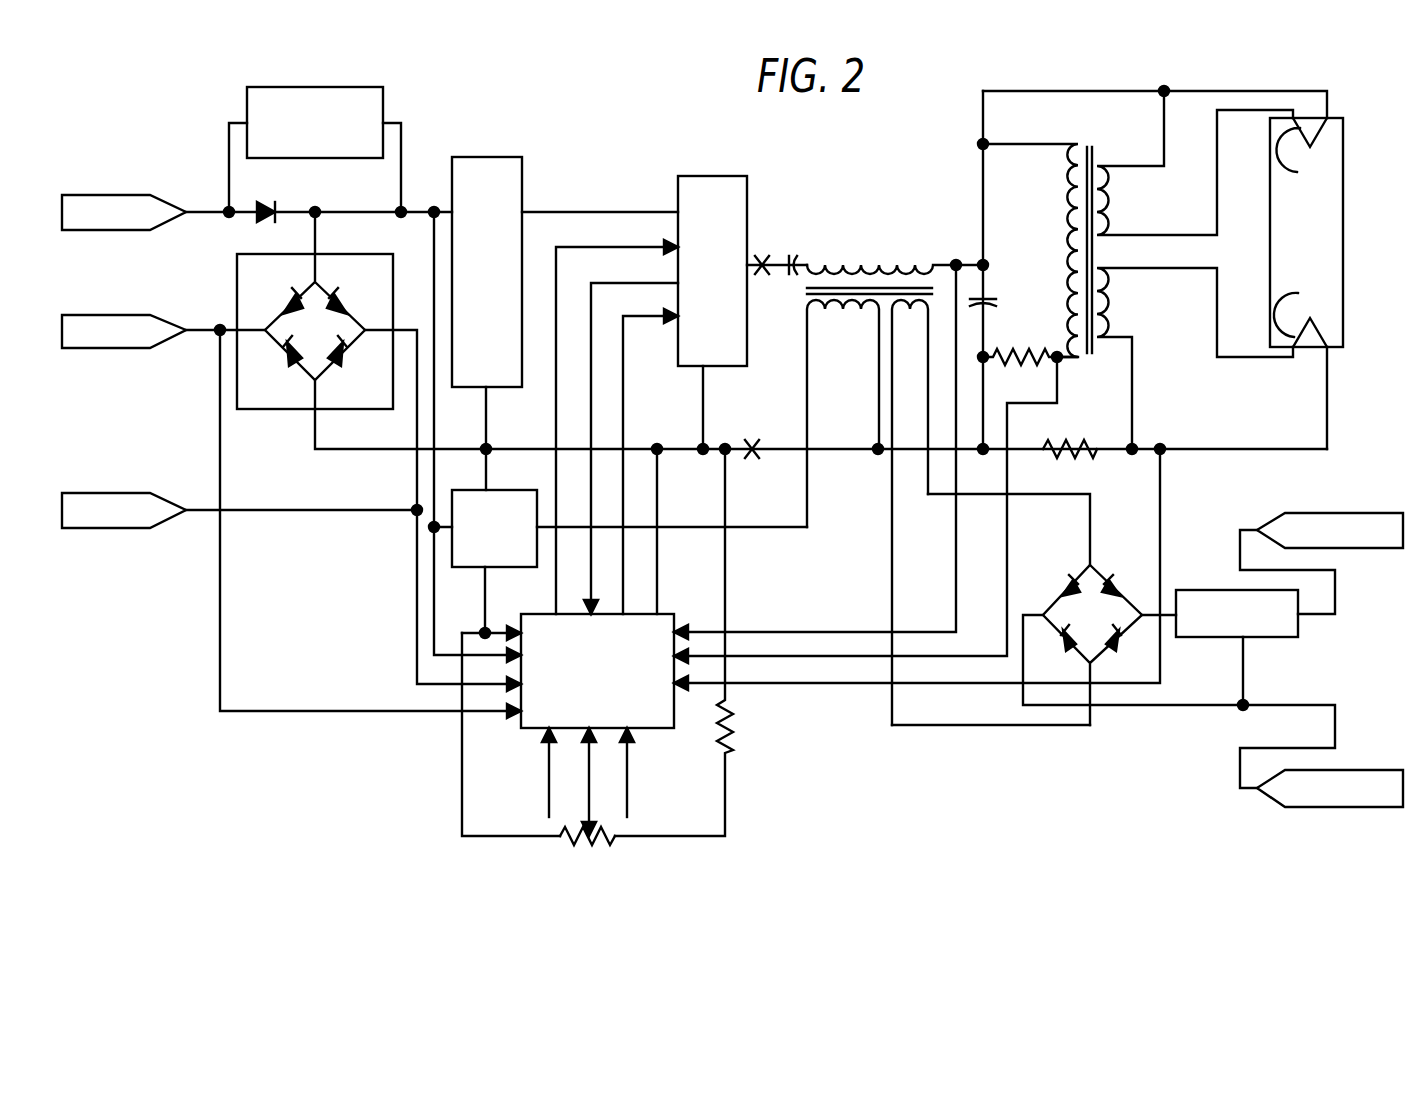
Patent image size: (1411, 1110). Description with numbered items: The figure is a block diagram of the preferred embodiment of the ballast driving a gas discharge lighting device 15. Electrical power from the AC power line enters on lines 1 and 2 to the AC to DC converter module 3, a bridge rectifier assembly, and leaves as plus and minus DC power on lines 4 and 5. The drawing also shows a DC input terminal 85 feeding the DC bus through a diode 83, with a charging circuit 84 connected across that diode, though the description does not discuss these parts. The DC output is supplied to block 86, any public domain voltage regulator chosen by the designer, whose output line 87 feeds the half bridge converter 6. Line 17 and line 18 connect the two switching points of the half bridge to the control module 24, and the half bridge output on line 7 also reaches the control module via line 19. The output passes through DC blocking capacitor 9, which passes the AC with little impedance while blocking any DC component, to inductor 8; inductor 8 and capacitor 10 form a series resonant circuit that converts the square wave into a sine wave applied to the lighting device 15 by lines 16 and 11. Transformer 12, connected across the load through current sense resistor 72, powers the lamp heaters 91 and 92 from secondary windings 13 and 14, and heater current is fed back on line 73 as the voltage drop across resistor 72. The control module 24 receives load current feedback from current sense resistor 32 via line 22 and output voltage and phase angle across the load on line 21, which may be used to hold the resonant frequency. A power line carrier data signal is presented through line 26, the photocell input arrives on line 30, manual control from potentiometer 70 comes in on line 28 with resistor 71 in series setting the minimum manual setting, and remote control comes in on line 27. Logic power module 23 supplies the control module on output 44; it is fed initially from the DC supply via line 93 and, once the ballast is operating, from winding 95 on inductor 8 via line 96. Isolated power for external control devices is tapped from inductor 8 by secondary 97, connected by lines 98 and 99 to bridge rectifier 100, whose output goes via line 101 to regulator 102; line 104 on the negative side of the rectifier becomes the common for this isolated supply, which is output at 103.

The AC power line 1 is at (215, 328).
The AC power line 2 is at (200, 512).
The AC to DC converter module 3 is at (237, 278).
The DC output line 4 is at (335, 214).
The DC output line 5 is at (333, 452).
The half bridge converter 6 is at (705, 176).
The output line 7 is at (762, 256).
The inductor 8 is at (848, 268).
The DC blocking capacitor 9 is at (793, 256).
The capacitor 10 is at (990, 297).
The load line 11 is at (765, 452).
The heater transformer 12 is at (1092, 155).
The secondary winding 13 is at (1108, 188).
The secondary winding 14 is at (1110, 285).
The gas discharge lighting device 15 is at (1343, 260).
The load line 16 is at (1078, 91).
The control line 17 is at (565, 247).
The control line 18 is at (637, 316).
The control line 19 is at (600, 283).
The voltage feedback line 21 is at (956, 550).
The current feedback line 22 is at (775, 686).
The logic power module 23 is at (497, 490).
The control module 24 is at (366, 711).
The power line carrier signal line 26 is at (417, 630).
The remote control line 27 is at (549, 752).
The manual control line 28 is at (589, 778).
The photocell input line 30 is at (627, 772).
The current sense resistor 32 is at (1088, 445).
The logic power module output 44 is at (462, 812).
The potentiometer 70 is at (560, 850).
The resistor 71 is at (732, 740).
The current sense resistor 72 is at (1017, 350).
The heater current feedback line 73 is at (1060, 365).
The diode 83 is at (285, 212).
The charging circuit 84 is at (247, 110).
The DC input terminal 85 is at (200, 212).
The voltage regulator 86 is at (468, 157).
The power line to inverter 87 is at (550, 212).
The lamp heater 91 is at (1288, 165).
The lamp heater 92 is at (1290, 305).
The DC supply line 93 is at (436, 430).
The winding 95 is at (850, 315).
The logic power supply line 96 is at (708, 405).
The secondary winding 97 is at (903, 320).
The winding lead line 98 is at (892, 540).
The winding lead line 99 is at (1078, 497).
The bridge rectifier 100 is at (1092, 645).
The rectifier output line 101 is at (1179, 701).
The regulator 102 is at (1212, 590).
The isolated supply output 103 is at (1336, 513).
The common line 104 is at (1270, 705).